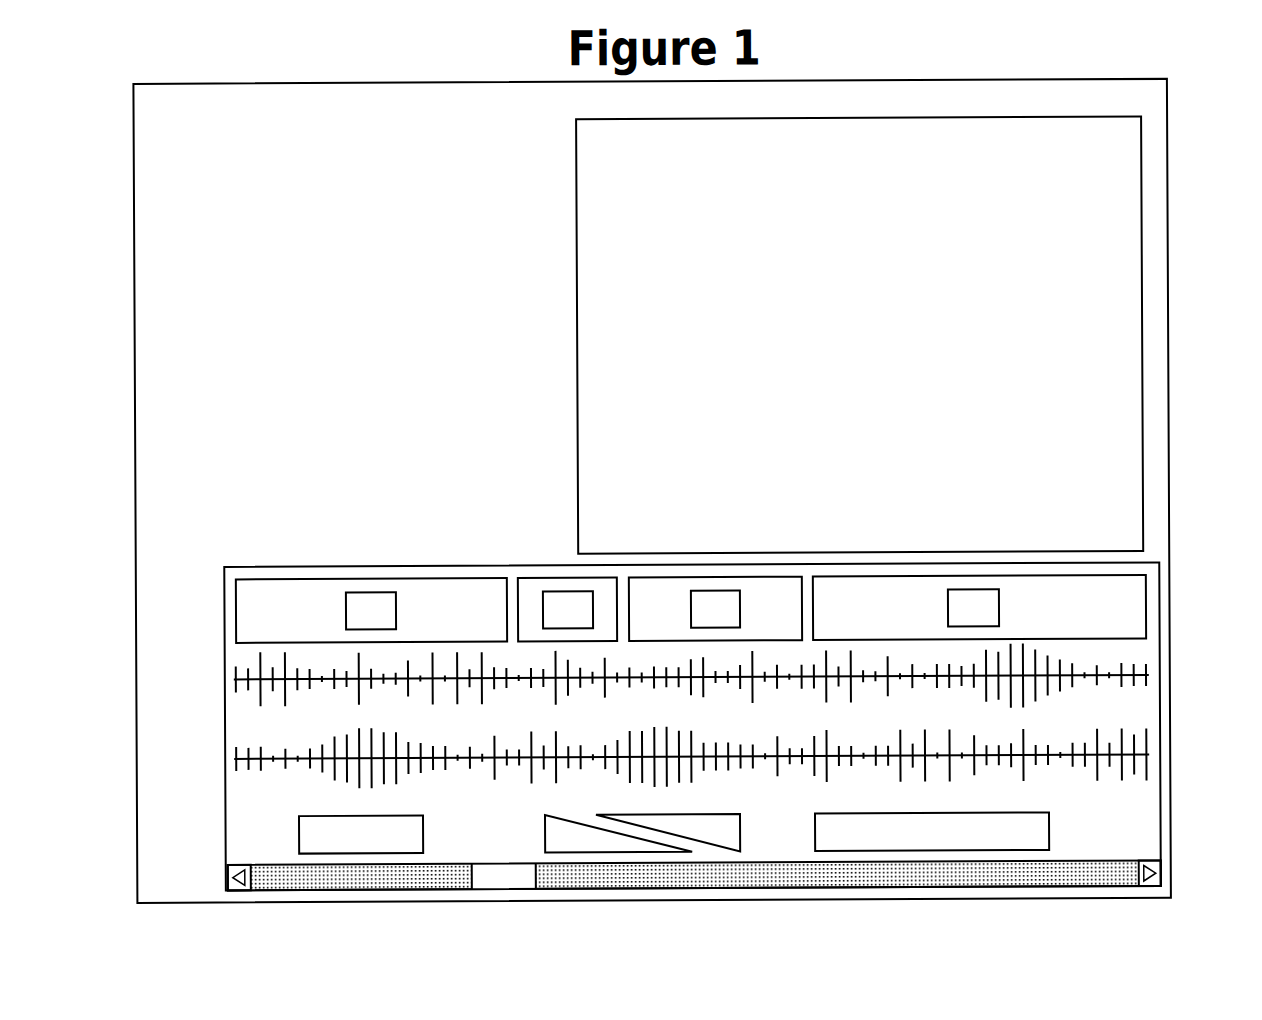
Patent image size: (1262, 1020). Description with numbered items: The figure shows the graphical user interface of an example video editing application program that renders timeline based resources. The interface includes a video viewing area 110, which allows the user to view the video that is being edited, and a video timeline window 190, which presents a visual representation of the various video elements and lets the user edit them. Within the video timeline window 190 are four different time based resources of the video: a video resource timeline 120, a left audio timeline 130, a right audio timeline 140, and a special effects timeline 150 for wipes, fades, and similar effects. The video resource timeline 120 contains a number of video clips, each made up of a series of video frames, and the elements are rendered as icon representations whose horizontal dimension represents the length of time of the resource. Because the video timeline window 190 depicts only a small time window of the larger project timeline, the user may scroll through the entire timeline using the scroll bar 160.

The video viewing area 110 is at (859, 335).
The video resource timeline 120 is at (1162, 612).
The left audio timeline 130 is at (1163, 680).
The right audio timeline 140 is at (1165, 757).
The special effects timeline 150 is at (1147, 829).
The scroll bar 160 is at (1175, 876).
The video timeline window 190 is at (408, 552).